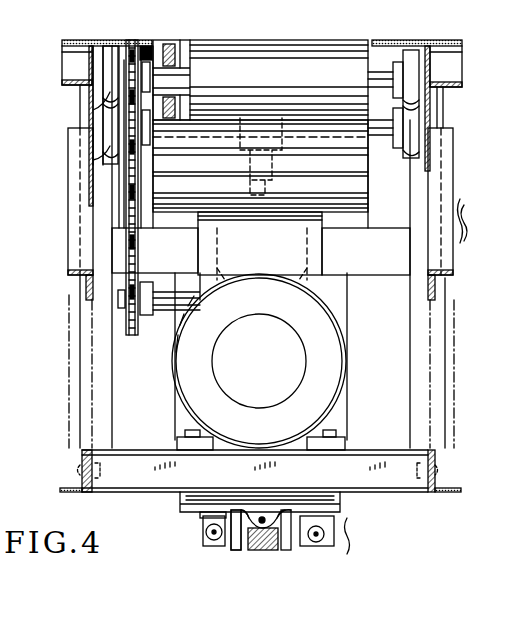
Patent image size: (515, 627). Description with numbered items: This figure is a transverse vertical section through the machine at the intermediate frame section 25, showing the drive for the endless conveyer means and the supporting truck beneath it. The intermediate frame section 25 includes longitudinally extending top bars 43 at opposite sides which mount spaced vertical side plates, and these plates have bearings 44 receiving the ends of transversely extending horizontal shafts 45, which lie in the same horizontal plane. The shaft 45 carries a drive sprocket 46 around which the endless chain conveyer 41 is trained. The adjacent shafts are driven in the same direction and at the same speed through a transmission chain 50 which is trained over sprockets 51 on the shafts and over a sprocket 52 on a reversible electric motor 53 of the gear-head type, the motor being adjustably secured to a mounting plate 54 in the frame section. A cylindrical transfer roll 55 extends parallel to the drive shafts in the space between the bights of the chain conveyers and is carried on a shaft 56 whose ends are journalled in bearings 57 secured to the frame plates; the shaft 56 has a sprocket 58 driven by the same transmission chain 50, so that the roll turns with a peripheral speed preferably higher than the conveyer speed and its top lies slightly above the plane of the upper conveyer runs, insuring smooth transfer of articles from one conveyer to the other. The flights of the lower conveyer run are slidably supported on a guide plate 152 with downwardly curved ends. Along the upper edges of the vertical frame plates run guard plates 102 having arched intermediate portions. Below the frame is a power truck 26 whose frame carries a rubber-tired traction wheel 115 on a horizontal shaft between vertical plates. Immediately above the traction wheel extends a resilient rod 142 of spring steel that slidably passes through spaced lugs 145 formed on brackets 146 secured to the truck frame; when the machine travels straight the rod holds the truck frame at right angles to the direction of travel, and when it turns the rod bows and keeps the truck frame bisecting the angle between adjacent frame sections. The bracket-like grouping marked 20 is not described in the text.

The guard plate 102 is at (68, 41).
The top bar 43 is at (92, 58).
The bearing 57 is at (104, 50).
The sprocket 58 is at (142, 48).
The cylindrical transfer roll 55 is at (308, 58).
The endless chain conveyer 41 is at (360, 200).
The drive sprocket 46 is at (272, 162).
The guide plate 152 is at (320, 248).
The shaft 56 is at (378, 74).
The horizontal shaft 45 is at (376, 128).
The bearing 44 is at (112, 148).
The sprocket 51 is at (126, 160).
The transmission chain 50 is at (126, 198).
The frame assembly 20 is at (476, 221).
The sprocket 52 is at (152, 318).
The reversible electric motor 53 is at (318, 348).
The mounting plate 54 is at (398, 478).
The intermediate frame section 25 is at (455, 488).
The power truck 26 is at (278, 523).
The resilient rod 142 is at (260, 520).
The lug 145 is at (272, 520).
The bracket 146 is at (205, 519).
The traction wheel 115 is at (232, 551).